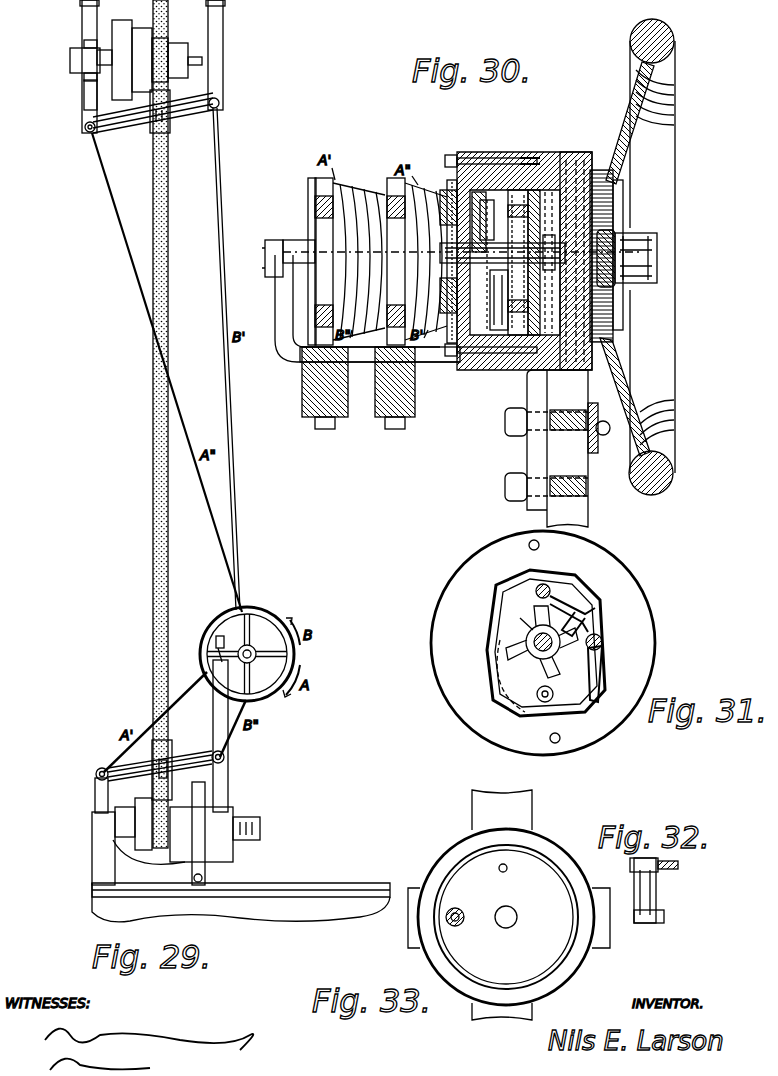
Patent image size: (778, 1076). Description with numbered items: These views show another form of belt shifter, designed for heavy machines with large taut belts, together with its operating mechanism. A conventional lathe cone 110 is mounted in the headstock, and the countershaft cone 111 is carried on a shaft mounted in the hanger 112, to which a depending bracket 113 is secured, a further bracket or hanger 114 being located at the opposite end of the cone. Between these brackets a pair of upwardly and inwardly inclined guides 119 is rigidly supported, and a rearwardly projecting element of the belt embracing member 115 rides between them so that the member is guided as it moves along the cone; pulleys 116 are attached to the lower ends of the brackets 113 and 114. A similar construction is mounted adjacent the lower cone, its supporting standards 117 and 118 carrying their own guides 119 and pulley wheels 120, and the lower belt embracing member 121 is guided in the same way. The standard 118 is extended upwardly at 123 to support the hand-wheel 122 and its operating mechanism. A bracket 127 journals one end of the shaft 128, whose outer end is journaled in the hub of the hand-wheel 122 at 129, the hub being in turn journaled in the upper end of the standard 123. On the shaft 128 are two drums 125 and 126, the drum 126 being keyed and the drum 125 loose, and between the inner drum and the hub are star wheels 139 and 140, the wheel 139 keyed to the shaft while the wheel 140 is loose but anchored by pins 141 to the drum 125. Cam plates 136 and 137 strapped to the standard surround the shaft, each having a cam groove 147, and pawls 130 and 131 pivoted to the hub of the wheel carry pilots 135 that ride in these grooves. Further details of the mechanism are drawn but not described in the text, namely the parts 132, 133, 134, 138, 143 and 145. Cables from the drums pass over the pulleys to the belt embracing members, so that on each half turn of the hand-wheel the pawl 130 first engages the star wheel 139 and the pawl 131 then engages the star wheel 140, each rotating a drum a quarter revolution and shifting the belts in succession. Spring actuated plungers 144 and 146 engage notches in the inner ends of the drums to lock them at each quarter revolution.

In FIG. 29, the lathe cone 110 is at (128, 826).
In FIG. 29, the countershaft cone 111 is at (149, 57).
In FIG. 29, the hanger 112 is at (90, 26).
In FIG. 29, the depending bracket 113 is at (85, 43).
In FIG. 29, the bracket or hanger 114 is at (216, 78).
In FIG. 29, the belt embracing member 115 is at (168, 127).
In FIG. 29, the pulleys 116 is at (86, 132).
In FIG. 29, the supporting standard or bracket 117 is at (95, 793).
In FIG. 29, the supporting standard or bracket 118 is at (218, 786).
In FIG. 29, the guides 119 is at (256, 766).
In FIG. 29, the pulley wheels 120 is at (98, 770).
In FIG. 29, the lower belt embracing member 121 is at (168, 755).
In FIG. 29, the hand-wheel 122 is at (262, 620).
In FIG. 30, the hand-wheel 122 is at (637, 257).
In FIG. 29, the upwardly extended standard 123 is at (214, 706).
In FIG. 30, the upwardly extended standard 123 is at (557, 448).
In FIG. 30, the drum 125 is at (445, 188).
In FIG. 30, the drum 126 is at (368, 178).
In FIG. 30, the bracket 127 is at (290, 345).
In FIG. 30, the shaft 128 is at (268, 255).
In FIG. 30, the journal of shaft in hub 129 is at (618, 214).
In FIG. 30, the pawl 130 is at (535, 180).
In FIG. 31, the pawl 130 is at (580, 612).
In FIG. 32, the pawl 130 is at (655, 893).
In FIG. 30, the pawl 131 is at (478, 366).
In FIG. 31, the pawl 131 is at (600, 680).
In FIG. 30, the casing wall 132 is at (570, 366).
In FIG. 33, the casing wall 132 is at (509, 905).
In FIG. 31, the screw 133 is at (602, 646).
In FIG. 32, the screw 133 is at (678, 866).
In FIG. 33, the screw 133 is at (455, 927).
In FIG. 31, the screw 134 is at (546, 584).
In FIG. 33, the screw 134 is at (498, 869).
In FIG. 30, the pilots 135 is at (448, 414).
In FIG. 31, the pilots 135 is at (590, 610).
In FIG. 32, the pilots 135 is at (666, 917).
In FIG. 30, the cam plate 136 is at (527, 160).
In FIG. 31, the cam plate 136 is at (605, 566).
In FIG. 30, the cam plate 137 is at (480, 190).
In FIG. 30, the plate 138 is at (588, 152).
In FIG. 30, the star wheel 139 is at (612, 320).
In FIG. 31, the star wheel 139 is at (530, 636).
In FIG. 30, the star wheel 140 is at (505, 366).
In FIG. 30, the pins 141 is at (519, 300).
In FIG. 31, the cavity 143 is at (518, 690).
In FIG. 30, the spring actuated plunger 144 is at (325, 428).
In FIG. 30, the bearing 145 is at (322, 232).
In FIG. 30, the spring actuated plunger 146 is at (395, 428).
In FIG. 29, the cam groove 147 is at (216, 642).
In FIG. 30, the cam groove 147 is at (486, 200).
In FIG. 31, the cam groove 147 is at (528, 718).